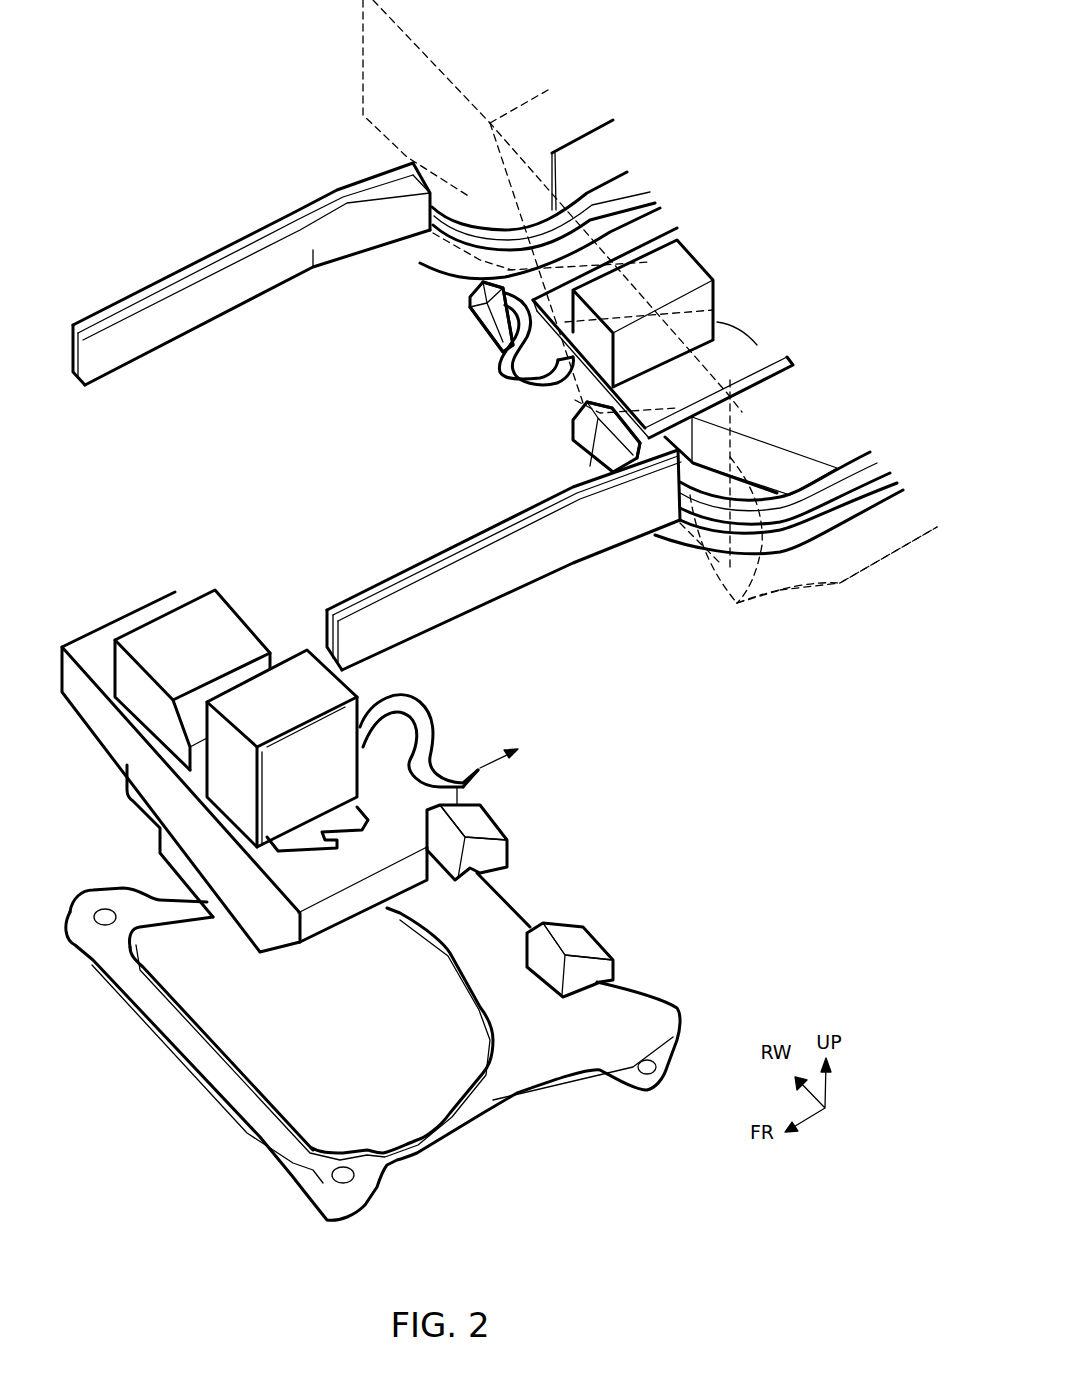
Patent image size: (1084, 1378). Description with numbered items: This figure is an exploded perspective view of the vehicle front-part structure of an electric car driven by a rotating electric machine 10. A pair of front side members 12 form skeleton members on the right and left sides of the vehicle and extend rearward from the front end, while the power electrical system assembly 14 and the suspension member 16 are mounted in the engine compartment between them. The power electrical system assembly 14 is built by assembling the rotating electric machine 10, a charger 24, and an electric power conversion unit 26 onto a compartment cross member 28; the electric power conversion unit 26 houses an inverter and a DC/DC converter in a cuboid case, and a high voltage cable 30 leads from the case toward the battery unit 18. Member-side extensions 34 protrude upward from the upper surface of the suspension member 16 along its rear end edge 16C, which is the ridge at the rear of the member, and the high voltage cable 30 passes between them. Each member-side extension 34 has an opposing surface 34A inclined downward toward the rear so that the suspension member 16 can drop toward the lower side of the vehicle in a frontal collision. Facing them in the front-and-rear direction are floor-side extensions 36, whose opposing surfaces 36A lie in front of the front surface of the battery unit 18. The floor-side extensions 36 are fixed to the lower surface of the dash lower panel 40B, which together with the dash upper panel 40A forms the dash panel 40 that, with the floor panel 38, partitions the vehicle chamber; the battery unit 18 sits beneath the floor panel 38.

The rotating electric machine 10 is at (244, 718).
The front side member 12 is at (167, 277).
The power electrical system assembly 14 is at (244, 718).
The suspension member 16 is at (376, 1015).
The rear end edge 16C is at (517, 907).
The battery unit 18 is at (778, 442).
The charger 24 is at (235, 600).
The electric power conversion unit 26 is at (297, 647).
The compartment cross member 28 is at (92, 643).
The high voltage cable 30 is at (537, 380).
The member-side extension 34 is at (509, 861).
The opposing surface 34A is at (477, 823).
The floor-side extension 36 is at (483, 307).
The opposing surface 36A is at (477, 327).
The floor panel 38 is at (837, 583).
The dash panel 40 is at (728, 592).
The dash upper panel 40A is at (729, 544).
The dash lower panel 40B is at (762, 631).